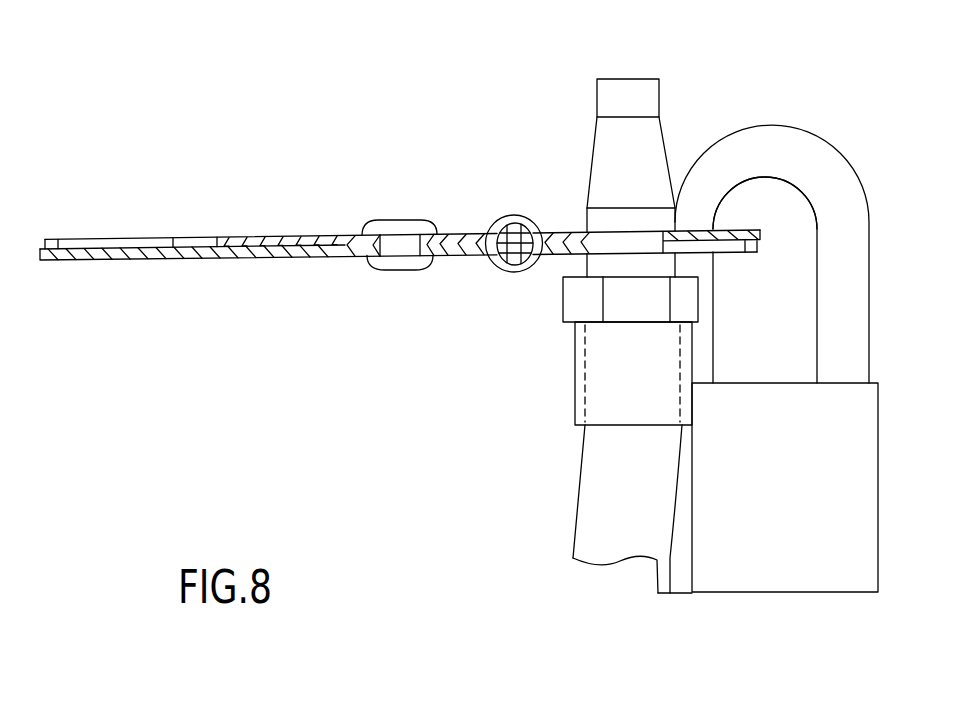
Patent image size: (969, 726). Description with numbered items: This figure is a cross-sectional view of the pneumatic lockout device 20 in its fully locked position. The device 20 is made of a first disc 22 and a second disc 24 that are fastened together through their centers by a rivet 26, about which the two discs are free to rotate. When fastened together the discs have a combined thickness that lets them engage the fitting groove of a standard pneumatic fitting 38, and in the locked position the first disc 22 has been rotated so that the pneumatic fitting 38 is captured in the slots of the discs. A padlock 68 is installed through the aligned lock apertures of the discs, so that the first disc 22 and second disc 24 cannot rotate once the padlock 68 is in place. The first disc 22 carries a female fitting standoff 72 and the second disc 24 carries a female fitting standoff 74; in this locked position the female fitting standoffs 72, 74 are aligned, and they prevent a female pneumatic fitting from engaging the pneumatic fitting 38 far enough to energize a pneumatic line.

The pneumatic lockout device 20 is at (232, 204).
The first disc 22 is at (311, 237).
The second disc 24 is at (272, 258).
The rivet 26 is at (401, 224).
The pneumatic fitting 38 is at (652, 137).
The padlock 68 is at (817, 157).
The female fitting standoff 72 is at (517, 216).
The female fitting standoff 74 is at (500, 271).